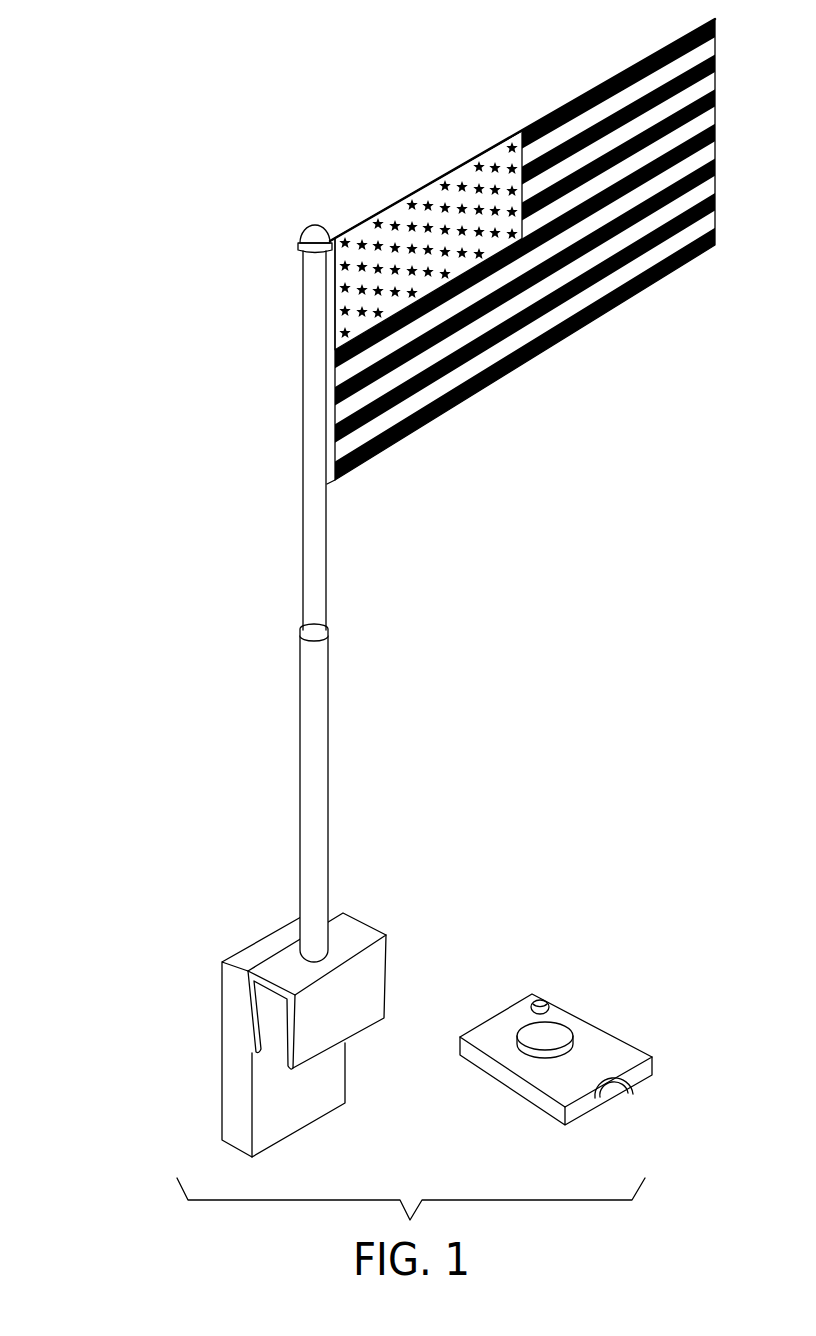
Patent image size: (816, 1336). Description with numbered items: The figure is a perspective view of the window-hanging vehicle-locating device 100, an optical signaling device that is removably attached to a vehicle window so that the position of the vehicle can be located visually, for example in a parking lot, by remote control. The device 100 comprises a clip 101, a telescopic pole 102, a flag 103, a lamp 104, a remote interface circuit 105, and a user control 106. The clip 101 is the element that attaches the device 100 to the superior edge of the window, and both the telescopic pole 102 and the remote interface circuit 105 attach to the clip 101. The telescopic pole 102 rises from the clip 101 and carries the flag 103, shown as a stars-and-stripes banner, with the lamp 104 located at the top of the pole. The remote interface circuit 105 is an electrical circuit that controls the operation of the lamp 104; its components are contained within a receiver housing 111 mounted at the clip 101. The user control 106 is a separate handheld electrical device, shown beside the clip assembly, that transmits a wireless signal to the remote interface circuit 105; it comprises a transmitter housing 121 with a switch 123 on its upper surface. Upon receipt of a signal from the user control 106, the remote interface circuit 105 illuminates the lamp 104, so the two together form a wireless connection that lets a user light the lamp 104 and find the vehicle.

The window-hanging vehicle-locating device 100 is at (190, 166).
The clip 101 is at (375, 987).
The telescopic pole 102 is at (318, 777).
The flag 103 is at (596, 309).
The lamp 104 is at (311, 228).
The remote interface circuit 105 is at (225, 1070).
The user control 106 is at (612, 1082).
The receiver housing 111 is at (305, 1105).
The transmitter housing 121 is at (608, 1050).
The switch 123 is at (547, 1037).